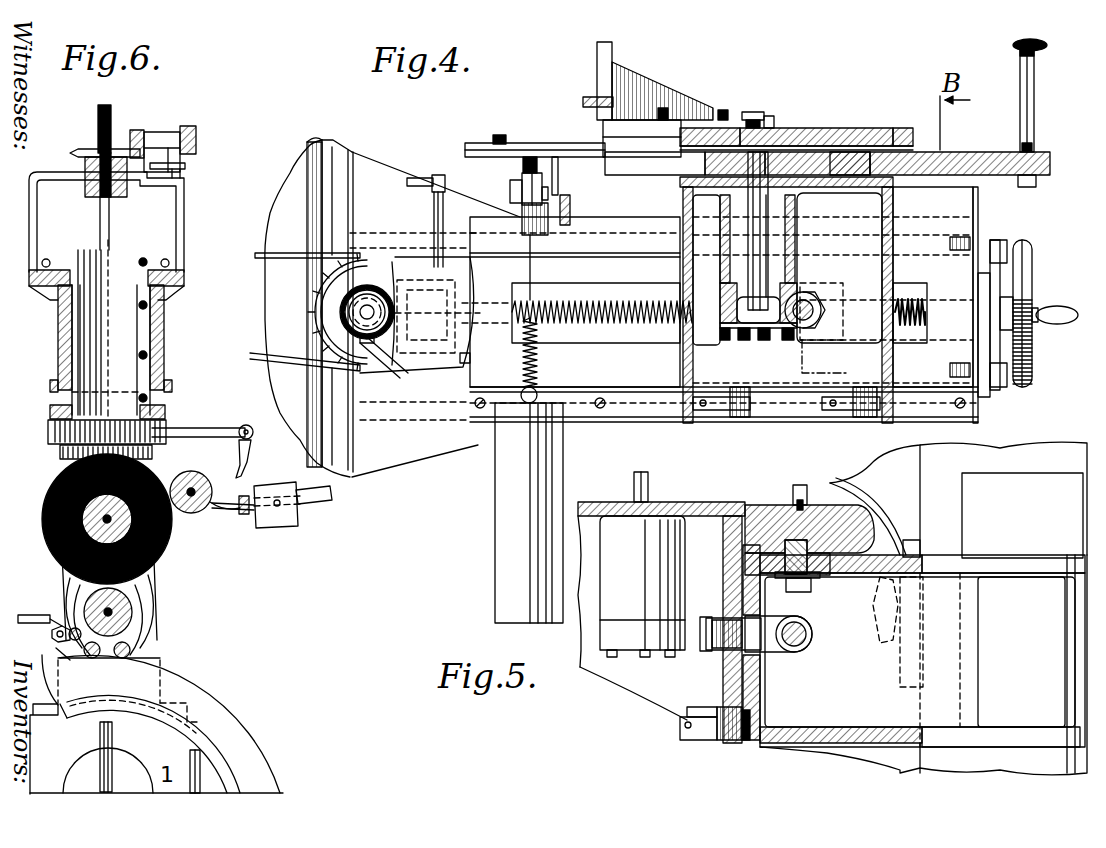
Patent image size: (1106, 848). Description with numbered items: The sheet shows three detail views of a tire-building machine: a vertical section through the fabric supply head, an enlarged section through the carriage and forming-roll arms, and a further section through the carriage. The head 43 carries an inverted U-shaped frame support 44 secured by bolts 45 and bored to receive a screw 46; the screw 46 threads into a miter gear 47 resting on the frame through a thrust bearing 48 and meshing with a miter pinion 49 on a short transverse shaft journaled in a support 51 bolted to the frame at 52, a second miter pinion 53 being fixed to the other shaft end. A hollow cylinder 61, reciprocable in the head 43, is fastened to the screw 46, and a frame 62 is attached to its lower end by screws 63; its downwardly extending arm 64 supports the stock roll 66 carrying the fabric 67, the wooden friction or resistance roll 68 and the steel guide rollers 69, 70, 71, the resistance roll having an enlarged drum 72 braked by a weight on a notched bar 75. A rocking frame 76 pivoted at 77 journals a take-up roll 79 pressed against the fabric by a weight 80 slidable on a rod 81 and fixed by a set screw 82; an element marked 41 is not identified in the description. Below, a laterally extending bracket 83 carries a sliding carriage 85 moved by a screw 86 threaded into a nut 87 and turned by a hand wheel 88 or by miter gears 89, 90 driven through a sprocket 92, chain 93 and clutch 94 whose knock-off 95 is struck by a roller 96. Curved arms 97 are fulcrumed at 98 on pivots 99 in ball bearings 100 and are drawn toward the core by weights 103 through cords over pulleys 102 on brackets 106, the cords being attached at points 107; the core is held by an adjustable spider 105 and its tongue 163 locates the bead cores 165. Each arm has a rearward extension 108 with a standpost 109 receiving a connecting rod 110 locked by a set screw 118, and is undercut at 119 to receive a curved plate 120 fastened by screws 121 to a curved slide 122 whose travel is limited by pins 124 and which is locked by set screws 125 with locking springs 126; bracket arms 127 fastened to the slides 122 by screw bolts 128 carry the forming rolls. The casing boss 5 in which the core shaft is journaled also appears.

In FIG. 5, the boss 5 is at (882, 456).
In FIG. 6, the bracket 41 is at (150, 588).
In FIG. 6, the head 43 is at (160, 312).
In FIG. 6, the frame support 44 is at (37, 222).
In FIG. 6, the bolts 45 is at (45, 288).
In FIG. 6, the screw 46 is at (98, 108).
In FIG. 6, the miter gear 47 is at (82, 151).
In FIG. 6, the thrust bearing 48 is at (85, 170).
In FIG. 6, the miter pinion 49 is at (137, 130).
In FIG. 6, the support 51 is at (165, 135).
In FIG. 6, the bolts 52 is at (178, 168).
In FIG. 6, the second miter pinion 53 is at (195, 130).
In FIG. 6, the hollow cylinder 61 is at (62, 398).
In FIG. 6, the frame 62 is at (58, 448).
In FIG. 6, the screws 63 is at (50, 428).
In FIG. 6, the arm 64 is at (128, 584).
In FIG. 6, the stock roll 66 is at (45, 536).
In FIG. 6, the fabric 67 is at (168, 536).
In FIG. 6, the friction or resistance roll 68 is at (120, 606).
In FIG. 6, the guide roller 69 is at (132, 652).
In FIG. 6, the guide roller 70 is at (58, 655).
In FIG. 6, the guide roller 71 is at (54, 636).
In FIG. 6, the drum 72 is at (145, 626).
In FIG. 6, the notched bar 75 is at (35, 615).
In FIG. 6, the rocking frame 76 is at (232, 512).
In FIG. 6, the pivot 77 is at (165, 440).
In FIG. 6, the take-up roll 79 is at (203, 488).
In FIG. 6, the weight 80 is at (283, 492).
In FIG. 6, the rod 81 is at (322, 498).
In FIG. 6, the set screw 82 is at (280, 508).
In FIG. 4, the bracket 83 is at (833, 287).
In FIG. 5, the bracket 83 is at (923, 665).
In FIG. 4, the carriage 85 is at (893, 205).
In FIG. 5, the carriage 85 is at (668, 688).
In FIG. 4, the screw 86 is at (638, 326).
In FIG. 5, the screw 86 is at (794, 650).
In FIG. 4, the nut 87 is at (843, 328).
In FIG. 5, the nut 87 is at (812, 640).
In FIG. 4, the hand wheel 88 is at (1034, 266).
In FIG. 4, the miter gear 89 is at (345, 322).
In FIG. 4, the miter gear 90 is at (374, 334).
In FIG. 4, the sprocket 92 is at (340, 298).
In FIG. 4, the chain 93 is at (305, 252).
In FIG. 4, the clutch 94 is at (388, 364).
In FIG. 4, the knock-off 95 is at (420, 178).
In FIG. 4, the roller 96 is at (526, 173).
In FIG. 4, the curved arms 97 is at (555, 157).
In FIG. 4, the fulcrum 98 is at (806, 128).
In FIG. 4, the pivots 99 is at (768, 264).
In FIG. 5, the pivots 99 is at (650, 486).
In FIG. 4, the ball bearings 100 is at (812, 290).
In FIG. 4, the pulleys 102 is at (545, 187).
In FIG. 4, the weights 103 is at (495, 500).
In FIG. 6, the adjustable spider 105 is at (104, 752).
In FIG. 4, the brackets 106 is at (575, 205).
In FIG. 4, the points 107 is at (530, 157).
In FIG. 4, the rearward extension 108 is at (962, 155).
In FIG. 4, the standposts 109 is at (1020, 104).
In FIG. 4, the connecting rods 110 is at (1023, 146).
In FIG. 4, the set screws 118 is at (1013, 44).
In FIG. 4, the undercut 119 is at (535, 161).
In FIG. 4, the curved plates 120 is at (876, 124).
In FIG. 4, the screws 121 is at (652, 186).
In FIG. 4, the curved slides 122 is at (903, 130).
In FIG. 4, the pins 124 is at (498, 136).
In FIG. 4, the set screws 125 is at (752, 114).
In FIG. 4, the locking springs 126 is at (772, 124).
In FIG. 4, the bracket arms 127 is at (612, 66).
In FIG. 4, the screw bolts 128 is at (650, 112).
In FIG. 6, the tongue or rib 163 is at (168, 724).
In FIG. 6, the bead cores 165 is at (228, 770).